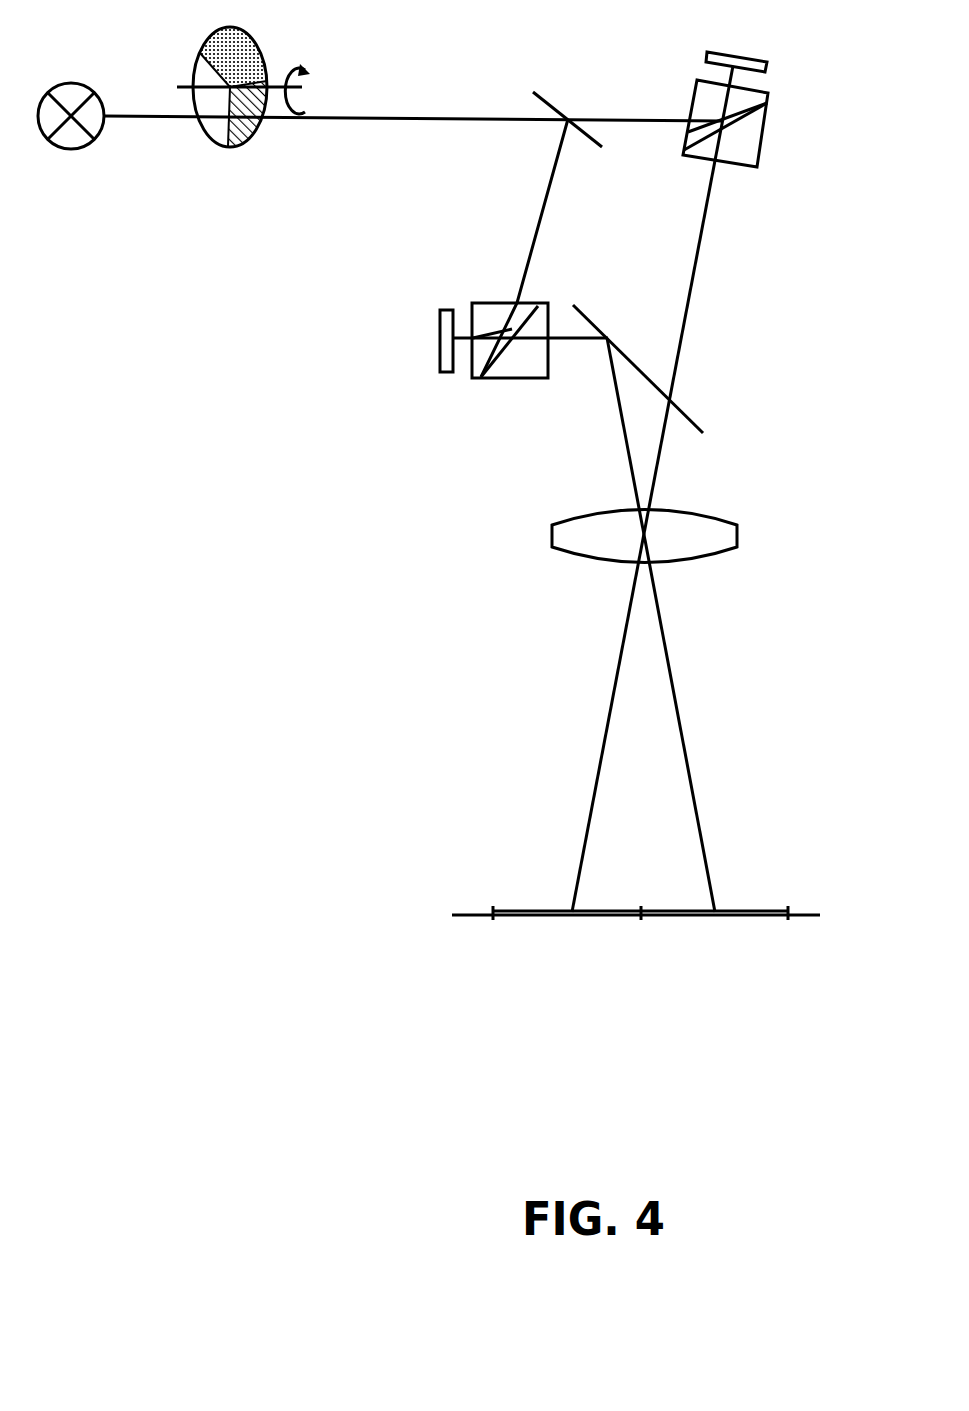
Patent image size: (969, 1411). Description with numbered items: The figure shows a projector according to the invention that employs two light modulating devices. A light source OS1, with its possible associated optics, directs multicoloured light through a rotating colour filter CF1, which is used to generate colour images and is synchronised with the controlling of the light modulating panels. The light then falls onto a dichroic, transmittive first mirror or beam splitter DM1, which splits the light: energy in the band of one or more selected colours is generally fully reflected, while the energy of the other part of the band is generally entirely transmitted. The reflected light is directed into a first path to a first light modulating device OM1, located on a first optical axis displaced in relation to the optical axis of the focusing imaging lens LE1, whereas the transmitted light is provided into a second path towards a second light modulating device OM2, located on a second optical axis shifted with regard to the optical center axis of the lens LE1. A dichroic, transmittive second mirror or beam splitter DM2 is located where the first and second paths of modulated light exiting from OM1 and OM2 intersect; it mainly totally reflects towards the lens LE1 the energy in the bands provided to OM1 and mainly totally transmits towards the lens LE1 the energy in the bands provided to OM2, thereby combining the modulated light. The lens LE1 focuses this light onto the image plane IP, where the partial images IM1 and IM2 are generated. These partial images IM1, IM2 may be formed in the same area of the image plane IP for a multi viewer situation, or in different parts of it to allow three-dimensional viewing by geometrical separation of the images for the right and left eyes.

The light source OS1 is at (87, 95).
The rotating colour filter CF1 is at (255, 79).
The dichroic, transmittive first mirror or beam splitter DM1 is at (567, 101).
The first light modulating device OM1 is at (480, 315).
The second light modulating device OM2 is at (762, 109).
The dichroic, transmittive second mirror or beam splitter DM2 is at (638, 355).
The focusing imaging lens LE1 is at (678, 524).
The image plane IP is at (649, 898).
The first partial image IM1 is at (714, 937).
The second partial image IM2 is at (567, 937).